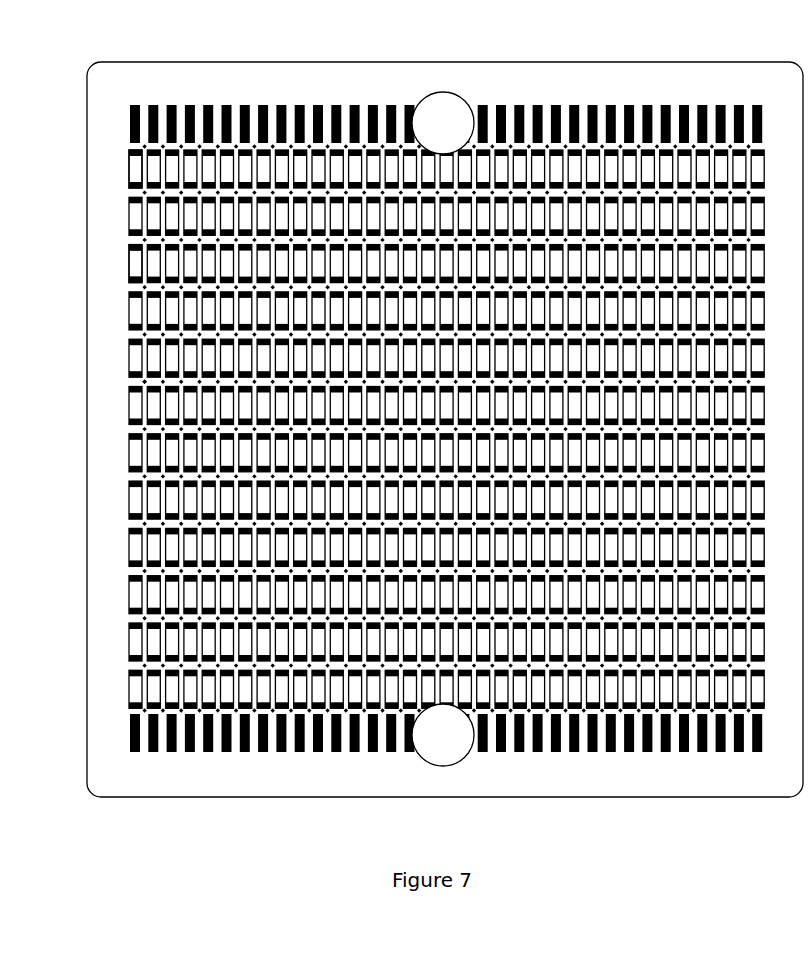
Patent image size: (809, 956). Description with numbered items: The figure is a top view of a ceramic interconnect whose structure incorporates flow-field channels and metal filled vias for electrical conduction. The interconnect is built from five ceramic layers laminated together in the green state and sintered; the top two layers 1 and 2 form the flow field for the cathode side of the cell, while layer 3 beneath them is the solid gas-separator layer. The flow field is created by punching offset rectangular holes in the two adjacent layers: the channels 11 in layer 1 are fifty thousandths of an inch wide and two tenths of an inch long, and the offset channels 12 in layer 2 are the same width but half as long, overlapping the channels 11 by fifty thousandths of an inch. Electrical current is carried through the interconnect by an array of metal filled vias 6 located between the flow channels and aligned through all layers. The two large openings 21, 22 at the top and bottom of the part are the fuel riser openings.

The top ceramic layer 1 is at (104, 137).
The second ceramic layer 2 is at (128, 172).
The solid gas-separator layer 3 is at (126, 116).
The metal filled vias 6 is at (127, 379).
The channels in layer 1 11 is at (124, 258).
The offset channels in layer 2 12 is at (128, 327).
The fuel riser opening 21 is at (444, 112).
The fuel riser opening 22 is at (443, 758).